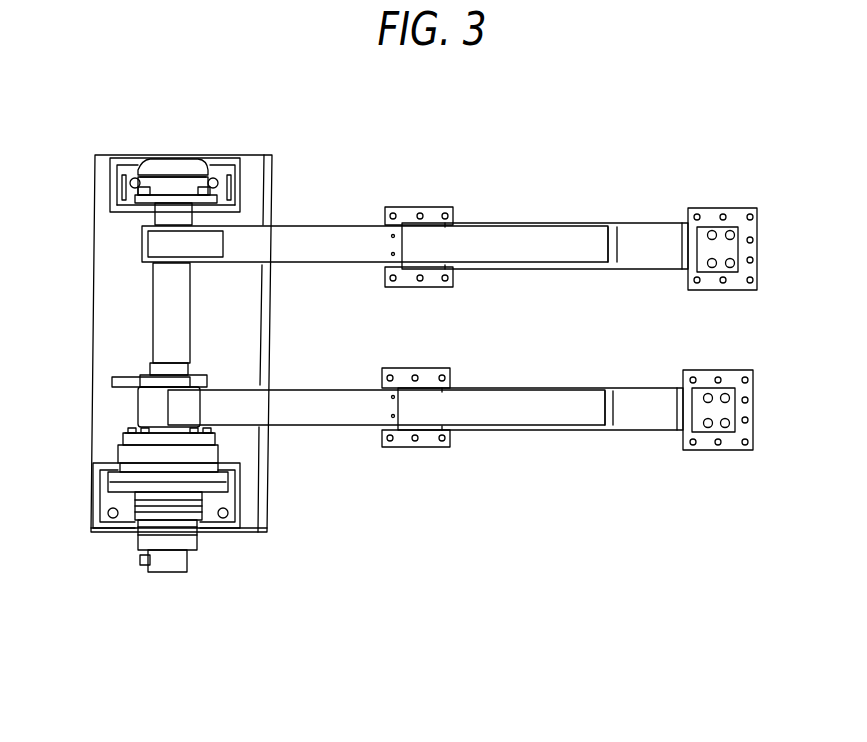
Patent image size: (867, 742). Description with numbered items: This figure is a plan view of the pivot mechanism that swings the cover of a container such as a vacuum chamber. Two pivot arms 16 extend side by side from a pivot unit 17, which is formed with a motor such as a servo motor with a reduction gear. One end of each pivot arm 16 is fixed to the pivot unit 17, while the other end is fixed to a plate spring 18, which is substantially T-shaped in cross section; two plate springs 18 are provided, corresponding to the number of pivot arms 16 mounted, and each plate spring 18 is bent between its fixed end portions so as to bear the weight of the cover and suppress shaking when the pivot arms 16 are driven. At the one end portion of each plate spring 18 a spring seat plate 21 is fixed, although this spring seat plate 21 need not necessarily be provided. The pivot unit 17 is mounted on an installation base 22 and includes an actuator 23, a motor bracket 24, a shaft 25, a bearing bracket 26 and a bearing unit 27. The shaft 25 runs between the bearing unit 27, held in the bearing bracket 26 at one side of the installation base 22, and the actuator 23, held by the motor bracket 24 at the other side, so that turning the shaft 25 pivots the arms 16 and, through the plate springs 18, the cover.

The pivot arm 16 is at (313, 240).
The pivot unit 17 is at (210, 545).
The plate spring 18 is at (639, 233).
The spring seat plate 21 is at (408, 212).
The installation base 22 is at (102, 360).
The actuator 23 is at (165, 548).
The motor bracket 24 is at (120, 498).
The shaft 25 is at (163, 313).
The bearing bracket 26 is at (117, 203).
The bearing unit 27 is at (172, 167).